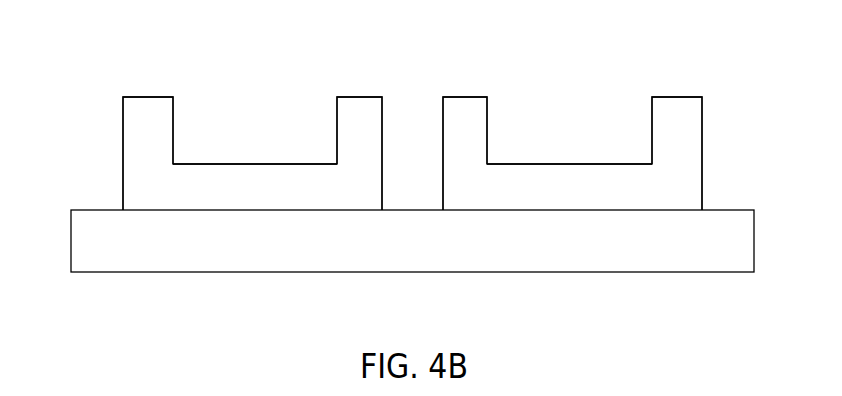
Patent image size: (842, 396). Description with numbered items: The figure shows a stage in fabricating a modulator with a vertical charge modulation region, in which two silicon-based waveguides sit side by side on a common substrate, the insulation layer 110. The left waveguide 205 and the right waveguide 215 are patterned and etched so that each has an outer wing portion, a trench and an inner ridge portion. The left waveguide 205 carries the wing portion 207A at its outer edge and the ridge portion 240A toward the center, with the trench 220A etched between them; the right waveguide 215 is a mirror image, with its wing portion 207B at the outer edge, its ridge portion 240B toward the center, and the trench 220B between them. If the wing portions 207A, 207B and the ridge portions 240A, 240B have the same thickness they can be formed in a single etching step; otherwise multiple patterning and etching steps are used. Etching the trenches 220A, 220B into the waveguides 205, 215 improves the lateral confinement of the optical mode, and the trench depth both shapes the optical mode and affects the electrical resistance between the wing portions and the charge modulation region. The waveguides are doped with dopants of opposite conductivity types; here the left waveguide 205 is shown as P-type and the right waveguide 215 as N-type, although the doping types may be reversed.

The insulation layer 110 is at (721, 249).
The left waveguide 205 is at (123, 132).
The right waveguide 215 is at (702, 147).
The wing portion 207A is at (145, 122).
The wing portion 207B is at (689, 130).
The trench 220A is at (257, 127).
The trench 220B is at (579, 127).
The ridge portion 240A is at (365, 130).
The ridge portion 240B is at (470, 125).